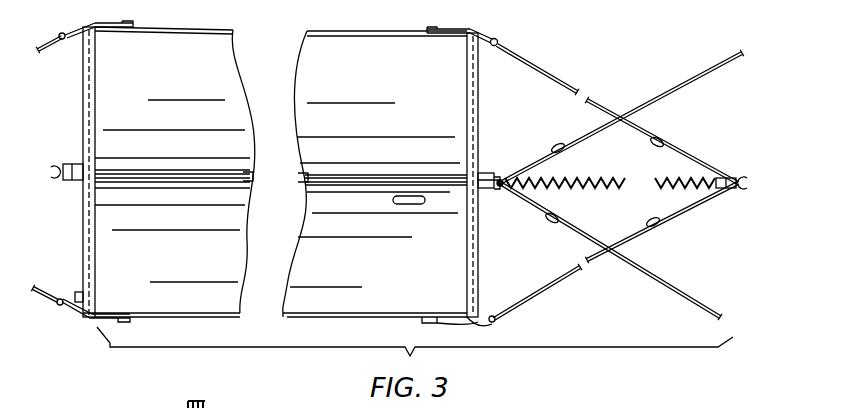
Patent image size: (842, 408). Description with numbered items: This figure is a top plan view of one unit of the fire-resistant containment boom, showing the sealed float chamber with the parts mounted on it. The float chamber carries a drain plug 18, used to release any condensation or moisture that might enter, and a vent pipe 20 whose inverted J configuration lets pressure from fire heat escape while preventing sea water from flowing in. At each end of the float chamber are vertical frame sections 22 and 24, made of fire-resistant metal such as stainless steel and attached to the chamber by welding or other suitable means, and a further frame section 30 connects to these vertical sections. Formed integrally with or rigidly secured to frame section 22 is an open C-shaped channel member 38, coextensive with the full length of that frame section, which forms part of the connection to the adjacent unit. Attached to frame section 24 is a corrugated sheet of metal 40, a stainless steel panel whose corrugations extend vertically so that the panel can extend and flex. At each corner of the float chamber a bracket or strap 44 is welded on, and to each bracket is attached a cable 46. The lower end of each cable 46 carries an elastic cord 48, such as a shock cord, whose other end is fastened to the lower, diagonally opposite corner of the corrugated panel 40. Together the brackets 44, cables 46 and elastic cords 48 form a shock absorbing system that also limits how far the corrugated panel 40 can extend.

The drain plug 18 is at (76, 292).
The vent pipe 20 is at (413, 204).
The vertical frame section 22 is at (78, 185).
The vertical frame section 24 is at (488, 190).
The frame section 30 is at (353, 172).
The open C-shaped channel member 38 is at (57, 181).
The corrugated sheet of metal 40 is at (590, 180).
The bracket or strap 44 is at (484, 328).
The cable 46 is at (617, 265).
The elastic cord 48 is at (540, 163).